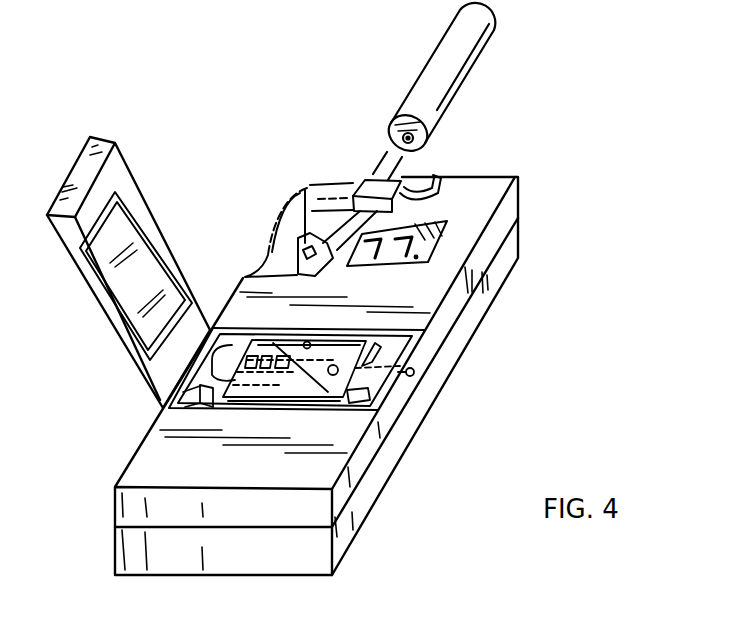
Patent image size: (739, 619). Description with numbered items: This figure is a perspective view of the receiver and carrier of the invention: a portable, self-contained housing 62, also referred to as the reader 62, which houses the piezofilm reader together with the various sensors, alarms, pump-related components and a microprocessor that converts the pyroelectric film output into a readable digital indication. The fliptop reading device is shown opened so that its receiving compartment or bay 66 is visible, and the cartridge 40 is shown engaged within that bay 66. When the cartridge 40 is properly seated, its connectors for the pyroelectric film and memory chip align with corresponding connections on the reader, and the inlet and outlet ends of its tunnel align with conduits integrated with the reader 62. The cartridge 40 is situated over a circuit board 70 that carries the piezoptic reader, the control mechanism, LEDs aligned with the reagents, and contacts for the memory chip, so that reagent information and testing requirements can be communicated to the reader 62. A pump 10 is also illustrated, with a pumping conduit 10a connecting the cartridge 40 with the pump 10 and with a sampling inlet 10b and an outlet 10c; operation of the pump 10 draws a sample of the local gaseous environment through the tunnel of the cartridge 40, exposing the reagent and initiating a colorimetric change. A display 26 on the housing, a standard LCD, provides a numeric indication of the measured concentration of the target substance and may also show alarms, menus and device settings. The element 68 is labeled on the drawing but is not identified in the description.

The pump 10 is at (372, 183).
The pumping conduit 10a is at (302, 190).
The sampling inlet 10b is at (413, 165).
The outlet 10c is at (414, 372).
The display 26 is at (447, 222).
The cartridge 40 is at (306, 397).
The housing 62 is at (505, 296).
The receiving compartment or bay 66 is at (195, 393).
The pen device 68 is at (468, 70).
The circuit board 70 is at (297, 253).